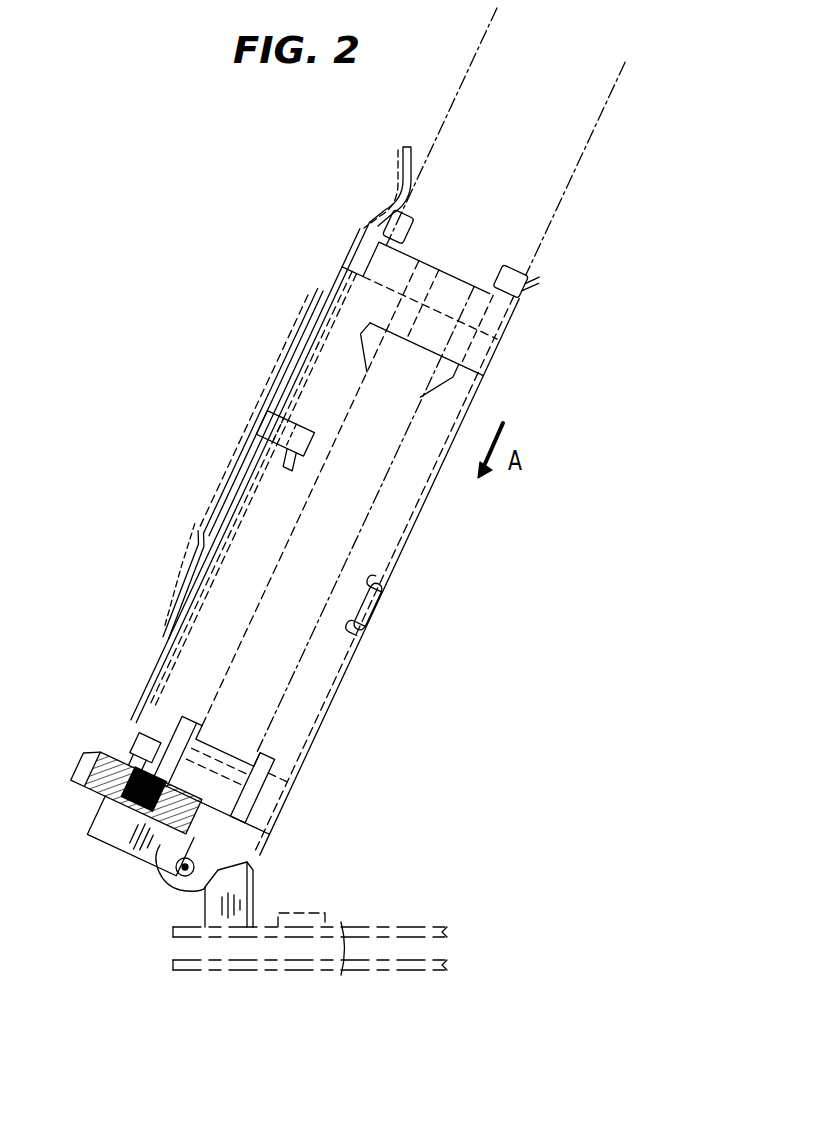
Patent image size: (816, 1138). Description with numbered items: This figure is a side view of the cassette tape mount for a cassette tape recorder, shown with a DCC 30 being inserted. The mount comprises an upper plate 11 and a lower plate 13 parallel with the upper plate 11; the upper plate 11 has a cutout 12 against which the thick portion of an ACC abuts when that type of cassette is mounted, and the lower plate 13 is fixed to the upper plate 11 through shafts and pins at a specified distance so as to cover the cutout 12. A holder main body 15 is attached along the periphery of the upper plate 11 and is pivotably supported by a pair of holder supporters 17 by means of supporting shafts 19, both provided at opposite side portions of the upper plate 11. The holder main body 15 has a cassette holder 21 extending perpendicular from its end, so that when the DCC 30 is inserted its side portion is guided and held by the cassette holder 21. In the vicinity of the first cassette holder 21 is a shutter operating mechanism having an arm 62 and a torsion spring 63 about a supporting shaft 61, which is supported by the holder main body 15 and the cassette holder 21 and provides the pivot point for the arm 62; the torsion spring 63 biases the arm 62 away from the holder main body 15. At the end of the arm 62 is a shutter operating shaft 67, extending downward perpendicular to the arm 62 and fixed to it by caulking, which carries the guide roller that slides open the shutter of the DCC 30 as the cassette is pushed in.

The upper plate 11 is at (343, 933).
The cutout 12 is at (397, 930).
The lower plate 13 is at (213, 963).
The holder main body 15 is at (112, 842).
The holder supporter 17 is at (228, 887).
The supporting shaft 19 is at (177, 873).
The cassette holder 21 is at (152, 665).
The DCC 30 is at (563, 193).
The supporting shaft 61 is at (95, 827).
The arm 62 is at (222, 500).
The torsion spring 63 is at (133, 767).
The shutter operating shaft 67 is at (257, 432).